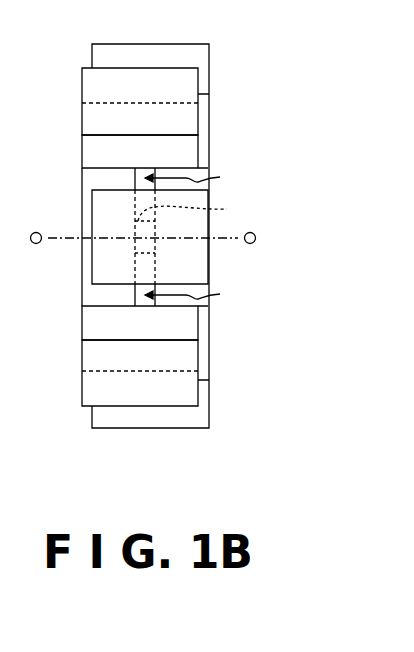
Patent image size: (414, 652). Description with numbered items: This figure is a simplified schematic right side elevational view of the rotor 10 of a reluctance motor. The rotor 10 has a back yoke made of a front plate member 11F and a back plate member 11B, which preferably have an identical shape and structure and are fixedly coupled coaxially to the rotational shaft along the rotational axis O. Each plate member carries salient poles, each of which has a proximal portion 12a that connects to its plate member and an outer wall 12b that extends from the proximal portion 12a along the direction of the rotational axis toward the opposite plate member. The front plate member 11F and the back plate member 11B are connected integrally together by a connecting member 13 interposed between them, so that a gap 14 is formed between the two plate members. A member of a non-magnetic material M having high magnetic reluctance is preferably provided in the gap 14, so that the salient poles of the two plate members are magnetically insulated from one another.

The rotor 10 is at (217, 100).
The outer wall 12b is at (127, 85).
The proximal portion 12a is at (180, 152).
The front plate member 11F is at (86, 296).
The back plate member 11B is at (197, 302).
The connecting member 13 is at (194, 226).
The gap 14 is at (205, 236).